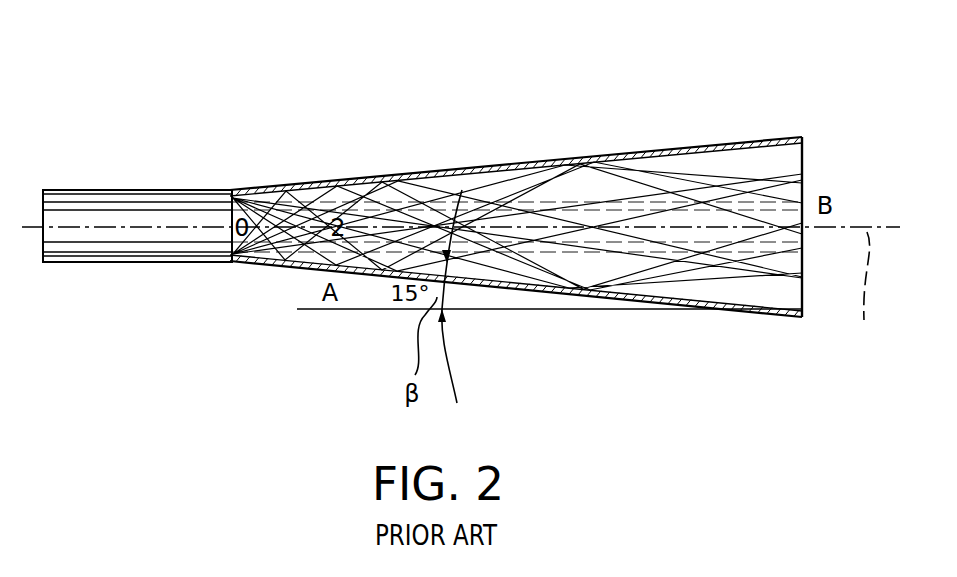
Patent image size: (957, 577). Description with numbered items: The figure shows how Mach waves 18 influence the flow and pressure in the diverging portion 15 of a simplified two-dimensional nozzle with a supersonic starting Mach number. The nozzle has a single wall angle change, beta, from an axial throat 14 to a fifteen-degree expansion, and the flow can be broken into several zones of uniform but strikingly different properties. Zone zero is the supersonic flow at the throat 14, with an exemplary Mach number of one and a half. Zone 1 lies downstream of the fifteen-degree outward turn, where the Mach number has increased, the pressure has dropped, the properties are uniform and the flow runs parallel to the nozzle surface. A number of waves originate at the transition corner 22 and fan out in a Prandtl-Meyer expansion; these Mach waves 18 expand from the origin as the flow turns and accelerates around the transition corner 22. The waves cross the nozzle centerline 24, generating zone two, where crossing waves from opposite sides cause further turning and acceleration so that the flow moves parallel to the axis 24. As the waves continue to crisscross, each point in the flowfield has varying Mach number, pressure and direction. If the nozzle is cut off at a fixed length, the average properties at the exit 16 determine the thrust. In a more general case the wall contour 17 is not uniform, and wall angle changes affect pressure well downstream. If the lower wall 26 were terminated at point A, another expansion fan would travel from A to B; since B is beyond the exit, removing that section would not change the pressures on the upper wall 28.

The axial throat 14 is at (232, 262).
The transition corner 22 is at (232, 262).
The diverging portion 15 is at (556, 164).
The upper wall 28 is at (700, 143).
The wall contour 17 is at (582, 160).
The exit 16 is at (802, 160).
The Mach waves 18 is at (473, 177).
The Zone 1 is at (273, 258).
The lower wall 26 is at (380, 273).
The nozzle centerline 24 is at (865, 292).